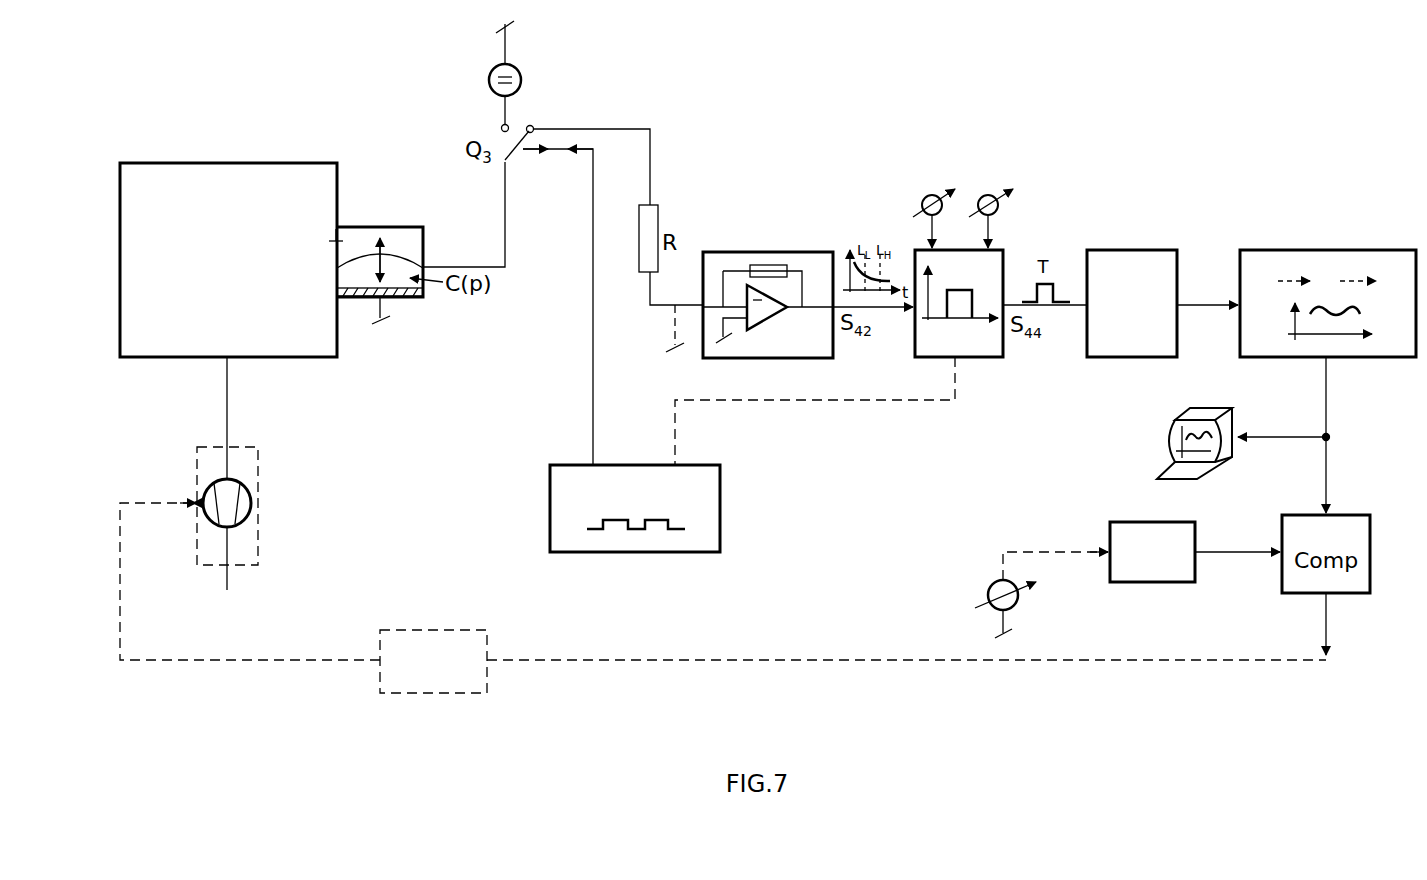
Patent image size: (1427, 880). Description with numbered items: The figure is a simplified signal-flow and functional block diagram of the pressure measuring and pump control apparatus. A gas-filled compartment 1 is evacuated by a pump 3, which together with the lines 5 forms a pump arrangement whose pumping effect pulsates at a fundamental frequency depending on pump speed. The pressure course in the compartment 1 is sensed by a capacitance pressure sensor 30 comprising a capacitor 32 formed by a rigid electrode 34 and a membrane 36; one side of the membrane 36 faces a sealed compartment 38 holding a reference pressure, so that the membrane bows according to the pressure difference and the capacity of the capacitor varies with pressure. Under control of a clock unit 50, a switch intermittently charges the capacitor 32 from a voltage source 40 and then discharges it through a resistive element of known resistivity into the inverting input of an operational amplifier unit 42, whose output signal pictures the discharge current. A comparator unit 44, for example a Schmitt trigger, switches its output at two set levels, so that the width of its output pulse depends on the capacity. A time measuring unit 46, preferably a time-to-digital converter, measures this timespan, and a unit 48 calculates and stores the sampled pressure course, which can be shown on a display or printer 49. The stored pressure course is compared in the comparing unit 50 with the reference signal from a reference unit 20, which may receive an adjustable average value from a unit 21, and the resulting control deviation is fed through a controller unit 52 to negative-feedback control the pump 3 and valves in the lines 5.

The compartment 1 is at (228, 163).
The pump 3 is at (252, 501).
The lines 5 is at (227, 401).
The reference unit 20 is at (1152, 582).
The adjustable reference average unit 21 is at (988, 596).
The capacitance pressure sensor 30 is at (396, 312).
The capacitor 32 is at (332, 286).
The rigid electrode 34 is at (407, 298).
The membrane 36 is at (398, 254).
The sealed compartment 38 is at (347, 275).
The voltage source 40 is at (520, 69).
The operational amplifier unit 42 is at (767, 252).
The comparator unit 44 is at (960, 360).
The time measuring unit 46 is at (1130, 357).
The pressure calculating unit 48 is at (1305, 357).
The display or printer 49 is at (1232, 452).
The clock unit and comparing unit 50 is at (637, 555).
The controller unit 52 is at (432, 694).